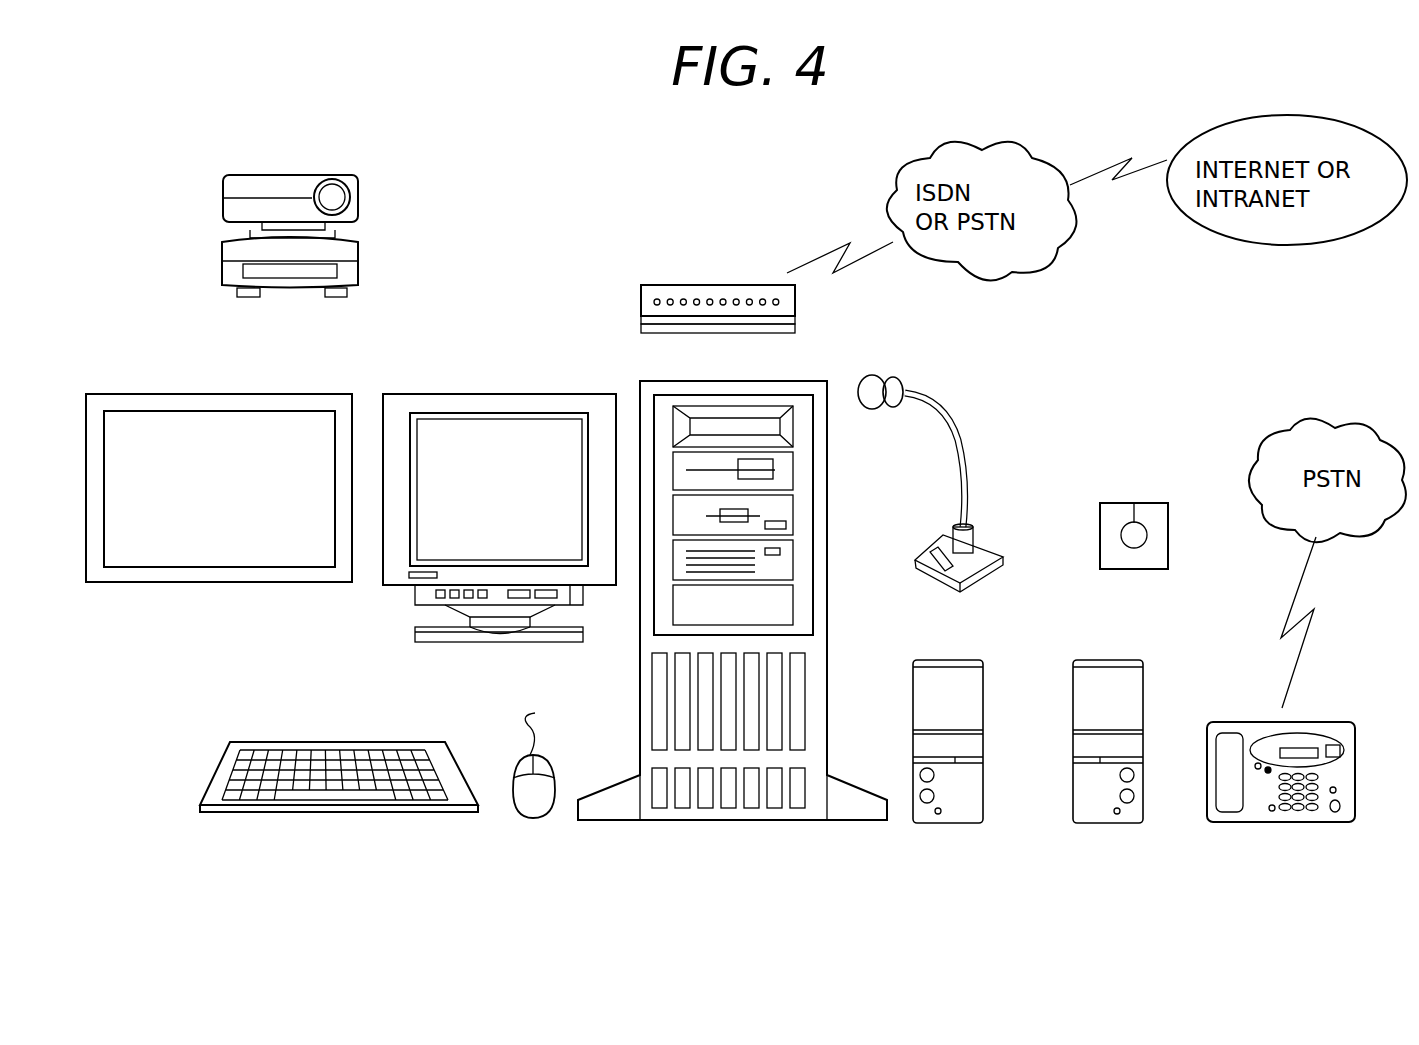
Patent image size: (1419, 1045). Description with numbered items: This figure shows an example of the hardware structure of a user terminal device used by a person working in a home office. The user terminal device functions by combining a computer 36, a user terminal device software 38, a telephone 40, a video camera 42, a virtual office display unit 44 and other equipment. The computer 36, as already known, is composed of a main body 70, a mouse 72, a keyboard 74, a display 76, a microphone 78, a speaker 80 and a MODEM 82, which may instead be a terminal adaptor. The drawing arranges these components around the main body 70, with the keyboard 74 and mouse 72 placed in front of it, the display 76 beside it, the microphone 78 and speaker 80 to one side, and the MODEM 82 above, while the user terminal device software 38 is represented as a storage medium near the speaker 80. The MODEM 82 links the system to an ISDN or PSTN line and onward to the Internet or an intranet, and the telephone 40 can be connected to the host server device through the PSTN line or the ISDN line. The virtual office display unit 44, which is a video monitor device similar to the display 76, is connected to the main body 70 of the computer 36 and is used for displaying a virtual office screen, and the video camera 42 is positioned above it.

The computer 36 is at (196, 883).
The user terminal device software 38 is at (1145, 503).
The telephone 40 is at (1281, 815).
The video camera 42 is at (367, 228).
The virtual office display unit 44 is at (230, 394).
The main body 70 is at (745, 812).
The mouse 72 is at (538, 805).
The keyboard 74 is at (338, 815).
The display 76 is at (515, 394).
The microphone 78 is at (883, 380).
The speaker 80 is at (996, 672).
The MODEM 82 is at (722, 285).